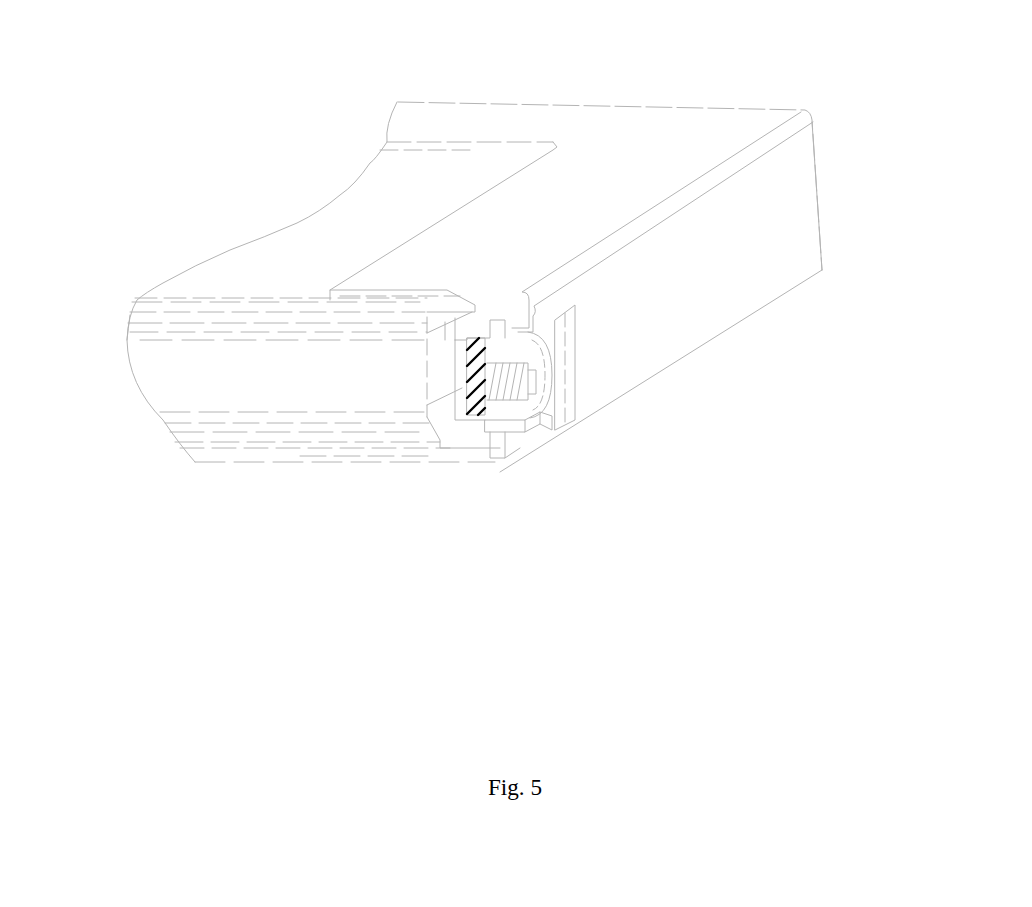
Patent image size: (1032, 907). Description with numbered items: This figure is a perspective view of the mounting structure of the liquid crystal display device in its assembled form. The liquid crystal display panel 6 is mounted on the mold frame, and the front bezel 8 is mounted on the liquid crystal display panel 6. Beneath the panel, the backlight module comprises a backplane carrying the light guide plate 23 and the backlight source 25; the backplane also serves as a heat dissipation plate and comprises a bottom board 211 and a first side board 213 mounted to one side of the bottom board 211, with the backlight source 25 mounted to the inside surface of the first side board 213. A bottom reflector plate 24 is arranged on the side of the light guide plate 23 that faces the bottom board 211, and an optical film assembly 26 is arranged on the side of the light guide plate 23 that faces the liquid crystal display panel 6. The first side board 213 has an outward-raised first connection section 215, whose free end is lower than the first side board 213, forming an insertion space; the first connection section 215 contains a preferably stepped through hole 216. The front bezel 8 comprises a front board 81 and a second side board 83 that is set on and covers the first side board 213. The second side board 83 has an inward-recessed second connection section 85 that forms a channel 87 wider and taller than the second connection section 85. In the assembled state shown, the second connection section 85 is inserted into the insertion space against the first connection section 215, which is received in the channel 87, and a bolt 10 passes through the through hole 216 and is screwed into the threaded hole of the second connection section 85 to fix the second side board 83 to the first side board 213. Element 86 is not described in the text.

The front bezel 8 is at (690, 137).
The front board 81 is at (458, 245).
The second side board 83 is at (770, 248).
The second connection section 85 is at (495, 345).
The channel 87 is at (565, 340).
The liquid crystal display panel 6 is at (255, 285).
The optical film assembly 26 is at (165, 319).
The light guide plate 23 is at (198, 387).
The bottom reflector plate 24 is at (215, 433).
The bottom board 211 is at (295, 455).
The backlight source 25 is at (460, 395).
The bracket 86 is at (500, 400).
The first side board 213 is at (498, 443).
The first connection section 215 is at (520, 430).
The through hole 216 is at (535, 425).
The bolt 10 is at (525, 383).